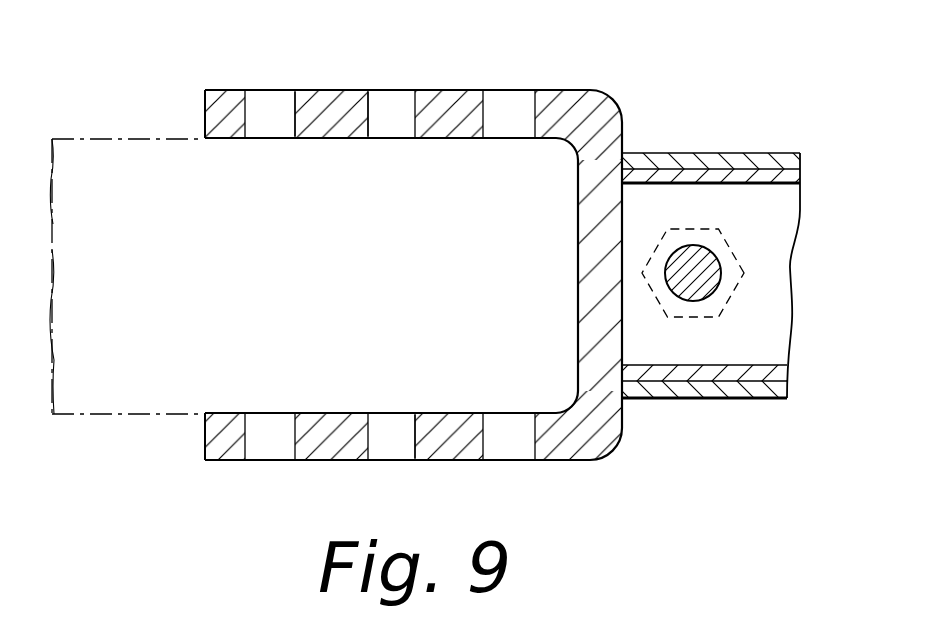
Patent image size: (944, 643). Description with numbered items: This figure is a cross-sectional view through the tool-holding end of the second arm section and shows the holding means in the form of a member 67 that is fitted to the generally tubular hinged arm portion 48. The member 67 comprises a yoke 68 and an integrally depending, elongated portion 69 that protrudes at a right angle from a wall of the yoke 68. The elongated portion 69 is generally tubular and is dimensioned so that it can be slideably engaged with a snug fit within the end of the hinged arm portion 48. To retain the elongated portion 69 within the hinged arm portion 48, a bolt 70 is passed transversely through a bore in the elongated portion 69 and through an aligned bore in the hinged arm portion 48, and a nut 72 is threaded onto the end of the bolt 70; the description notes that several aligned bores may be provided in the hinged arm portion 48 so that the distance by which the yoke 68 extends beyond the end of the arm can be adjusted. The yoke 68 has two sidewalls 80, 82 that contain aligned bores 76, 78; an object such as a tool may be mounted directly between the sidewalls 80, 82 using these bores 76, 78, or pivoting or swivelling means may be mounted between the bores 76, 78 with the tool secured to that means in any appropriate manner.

The member 67 is at (567, 90).
The yoke 68 is at (450, 90).
The elongated portion 69 is at (721, 176).
The bolt 70 is at (690, 286).
The nut 72 is at (728, 233).
The bore 76 is at (290, 140).
The bore 78 is at (372, 414).
The sidewall 80 is at (330, 93).
The sidewall 82 is at (450, 413).
The hinged arm portion 48 is at (798, 153).